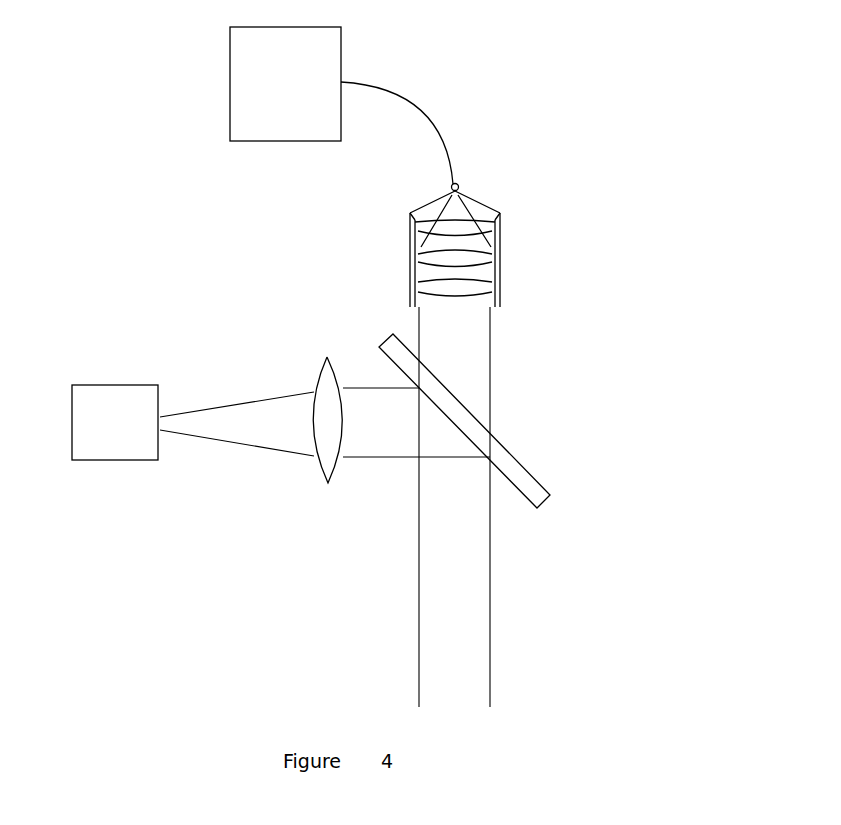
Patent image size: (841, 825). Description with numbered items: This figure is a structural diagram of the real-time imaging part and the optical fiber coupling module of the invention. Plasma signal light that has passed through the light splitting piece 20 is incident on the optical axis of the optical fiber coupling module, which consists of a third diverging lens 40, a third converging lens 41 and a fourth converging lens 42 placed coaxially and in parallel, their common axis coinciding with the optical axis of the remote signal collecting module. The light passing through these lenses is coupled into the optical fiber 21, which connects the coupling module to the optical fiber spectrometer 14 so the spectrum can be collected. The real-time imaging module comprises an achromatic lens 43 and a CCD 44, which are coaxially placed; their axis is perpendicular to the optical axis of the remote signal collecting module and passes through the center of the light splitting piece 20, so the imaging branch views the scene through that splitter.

The spectrometer 14 is at (230, 107).
The optical fiber 21 is at (418, 113).
The fourth converging lens 42 is at (495, 222).
The third converging lens 41 is at (495, 258).
The third diverging lens 40 is at (500, 293).
The light splitting piece 20 is at (527, 467).
The achromatic lens 43 is at (317, 378).
The CCD 44 is at (112, 383).